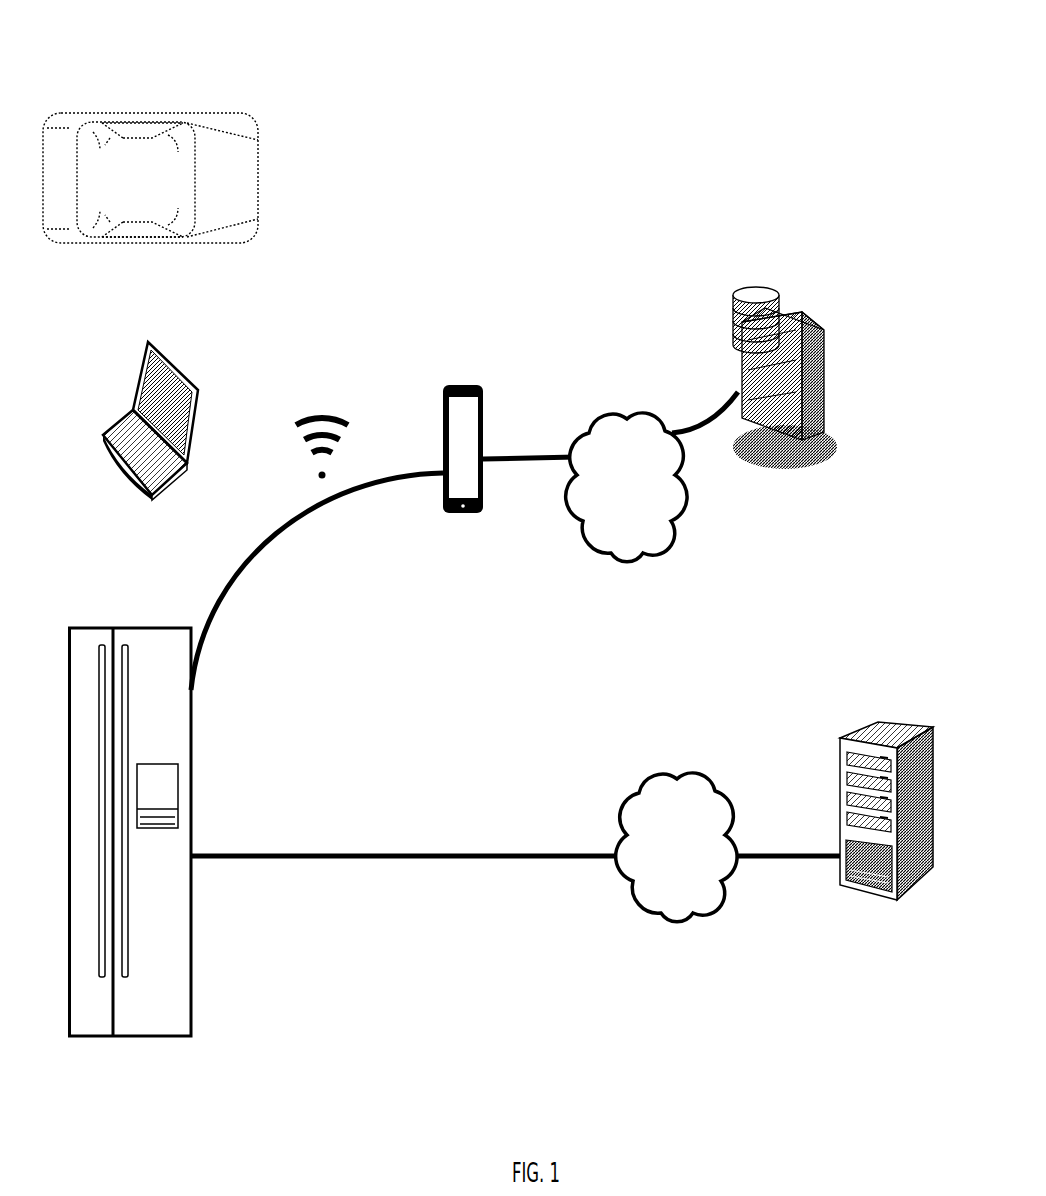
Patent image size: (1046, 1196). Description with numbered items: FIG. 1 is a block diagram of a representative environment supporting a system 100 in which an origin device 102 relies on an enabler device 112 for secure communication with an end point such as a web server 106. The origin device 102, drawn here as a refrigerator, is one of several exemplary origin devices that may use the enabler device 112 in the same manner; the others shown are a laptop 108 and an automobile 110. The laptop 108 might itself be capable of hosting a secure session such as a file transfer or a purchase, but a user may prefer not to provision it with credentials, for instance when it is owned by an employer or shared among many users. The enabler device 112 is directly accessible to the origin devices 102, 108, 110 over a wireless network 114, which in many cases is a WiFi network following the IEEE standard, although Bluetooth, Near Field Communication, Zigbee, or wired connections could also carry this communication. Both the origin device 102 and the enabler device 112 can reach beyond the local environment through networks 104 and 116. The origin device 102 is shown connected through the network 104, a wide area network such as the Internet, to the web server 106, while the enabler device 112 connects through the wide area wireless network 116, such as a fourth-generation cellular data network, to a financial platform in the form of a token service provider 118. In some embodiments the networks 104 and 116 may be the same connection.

The system 100 is at (459, 76).
The origin device 102 is at (120, 628).
The network 104 is at (665, 763).
The web server 106 is at (908, 728).
The laptop 108 is at (170, 352).
The automobile 110 is at (200, 113).
The enabler device 112 is at (475, 385).
The wireless network 114 is at (336, 418).
The wide area wireless network 116 is at (612, 405).
The token service provider 118 is at (810, 320).